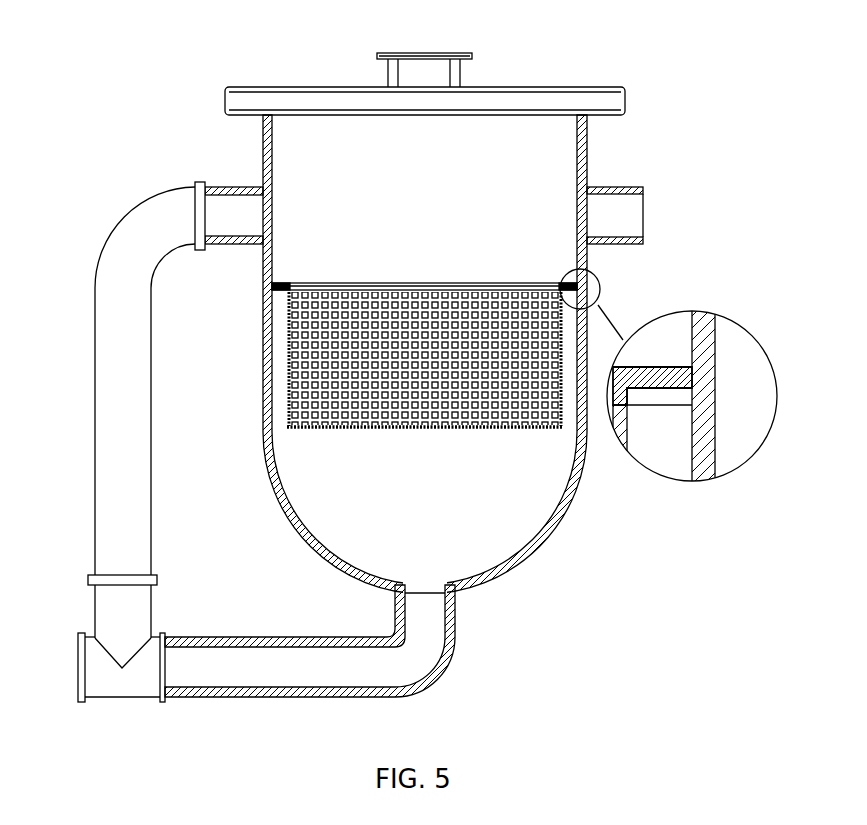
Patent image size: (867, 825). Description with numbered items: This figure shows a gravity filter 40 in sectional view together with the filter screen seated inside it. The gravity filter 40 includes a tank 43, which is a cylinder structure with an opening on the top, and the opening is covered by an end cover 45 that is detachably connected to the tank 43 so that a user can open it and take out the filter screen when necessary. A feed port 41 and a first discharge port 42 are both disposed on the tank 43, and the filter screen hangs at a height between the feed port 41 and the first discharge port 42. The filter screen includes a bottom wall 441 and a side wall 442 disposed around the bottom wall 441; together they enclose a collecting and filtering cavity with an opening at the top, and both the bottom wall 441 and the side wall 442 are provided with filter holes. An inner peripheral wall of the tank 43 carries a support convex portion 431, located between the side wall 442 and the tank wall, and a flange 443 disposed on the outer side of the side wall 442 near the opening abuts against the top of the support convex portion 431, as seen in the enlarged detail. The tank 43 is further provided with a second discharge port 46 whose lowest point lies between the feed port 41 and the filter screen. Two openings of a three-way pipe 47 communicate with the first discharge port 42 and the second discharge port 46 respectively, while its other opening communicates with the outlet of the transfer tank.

The gravity filter 40 is at (304, 70).
The feed port 41 is at (640, 222).
The first discharge port 42 is at (433, 608).
The tank 43 is at (513, 568).
The support convex portion 431 is at (640, 396).
The bottom wall 441 is at (527, 430).
The side wall 442 is at (570, 423).
The flange 443 is at (643, 368).
The end cover 45 is at (566, 100).
The second discharge port 46 is at (237, 213).
The three-way pipe 47 is at (108, 625).